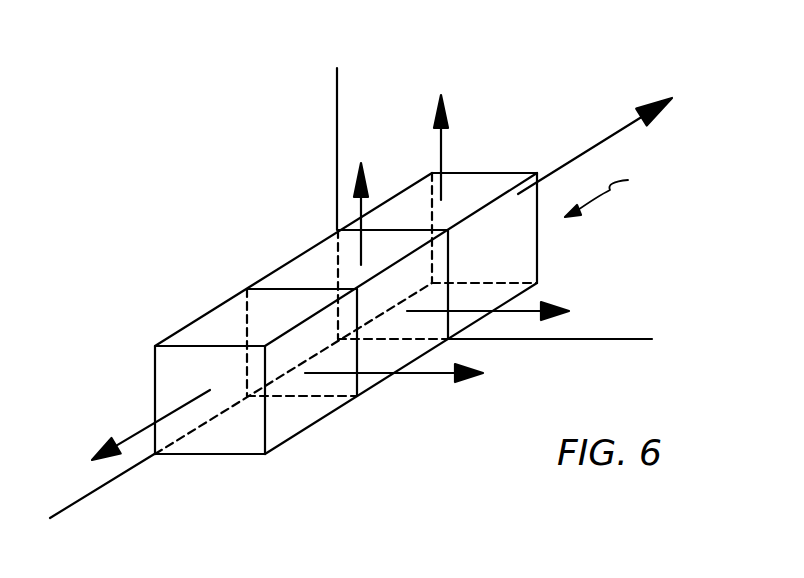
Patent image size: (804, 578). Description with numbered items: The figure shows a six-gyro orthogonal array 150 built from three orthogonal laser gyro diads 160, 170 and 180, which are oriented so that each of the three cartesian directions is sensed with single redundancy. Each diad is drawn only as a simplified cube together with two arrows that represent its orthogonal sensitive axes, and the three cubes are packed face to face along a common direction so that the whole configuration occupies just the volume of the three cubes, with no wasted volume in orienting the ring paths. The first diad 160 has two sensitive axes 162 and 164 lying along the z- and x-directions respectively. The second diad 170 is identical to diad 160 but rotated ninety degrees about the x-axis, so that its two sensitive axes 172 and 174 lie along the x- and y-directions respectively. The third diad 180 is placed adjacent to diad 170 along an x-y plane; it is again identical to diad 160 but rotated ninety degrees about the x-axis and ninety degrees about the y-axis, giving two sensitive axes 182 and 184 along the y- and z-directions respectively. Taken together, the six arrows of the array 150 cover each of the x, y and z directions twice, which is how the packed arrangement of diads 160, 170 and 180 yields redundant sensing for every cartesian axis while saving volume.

The six-gyro orthogonal array 150 is at (152, 192).
The diad 160 is at (305, 433).
The sensitive axis 162 is at (136, 433).
The sensitive axis 164 is at (485, 373).
The diad 170 is at (388, 396).
The sensitive axis 172 is at (571, 311).
The sensitive axis 174 is at (364, 176).
The diad 180 is at (618, 194).
The sensitive axis 182 is at (442, 108).
The sensitive axis 184 is at (618, 133).